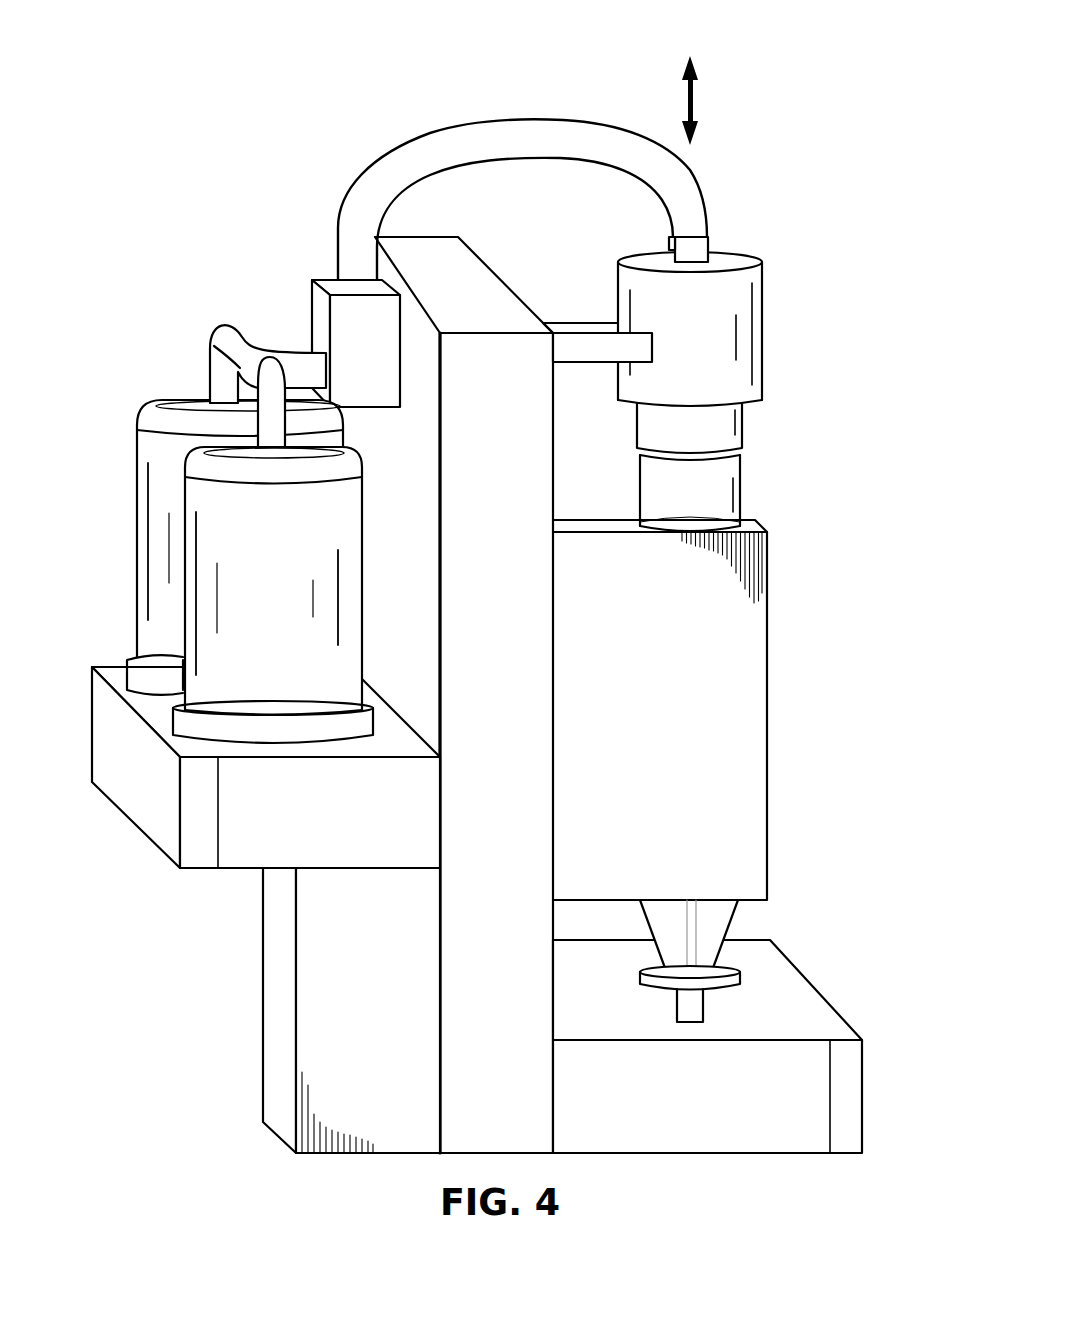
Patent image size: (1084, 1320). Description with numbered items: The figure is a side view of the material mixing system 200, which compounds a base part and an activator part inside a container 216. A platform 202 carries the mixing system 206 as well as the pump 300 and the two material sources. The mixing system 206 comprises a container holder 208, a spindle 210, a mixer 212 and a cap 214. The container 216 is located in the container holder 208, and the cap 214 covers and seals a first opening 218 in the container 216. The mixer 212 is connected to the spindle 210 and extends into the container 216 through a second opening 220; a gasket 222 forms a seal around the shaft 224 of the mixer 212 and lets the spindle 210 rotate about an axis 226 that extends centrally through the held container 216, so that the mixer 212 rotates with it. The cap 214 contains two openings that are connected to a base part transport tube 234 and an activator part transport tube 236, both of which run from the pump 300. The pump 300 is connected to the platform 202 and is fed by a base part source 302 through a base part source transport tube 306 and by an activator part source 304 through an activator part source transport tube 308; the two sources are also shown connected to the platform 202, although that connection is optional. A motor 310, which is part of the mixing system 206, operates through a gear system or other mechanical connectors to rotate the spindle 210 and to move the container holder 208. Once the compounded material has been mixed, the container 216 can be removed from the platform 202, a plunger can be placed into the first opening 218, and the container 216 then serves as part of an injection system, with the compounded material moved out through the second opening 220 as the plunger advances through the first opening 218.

The material mixing system 200 is at (280, 82).
The platform 202 is at (553, 790).
The mixing system 206 is at (888, 355).
The container holder 208 is at (768, 712).
The spindle 210 is at (703, 1005).
The mixer 212 is at (668, 930).
The cap 214 is at (763, 347).
The container 216 is at (742, 498).
The first opening 218 is at (730, 465).
The second opening 220 is at (673, 972).
The gasket 222 is at (707, 967).
The shaft 224 is at (697, 930).
The axis 226 is at (696, 99).
The base part transport tube 234 is at (507, 163).
The activator part transport tube 236 is at (450, 132).
The pump 300 is at (310, 307).
The base part source 302 is at (180, 643).
The activator part source 304 is at (137, 527).
The base part source transport tube 306 is at (275, 437).
The activator part source transport tube 308 is at (208, 373).
The motor 310 is at (273, 1012).